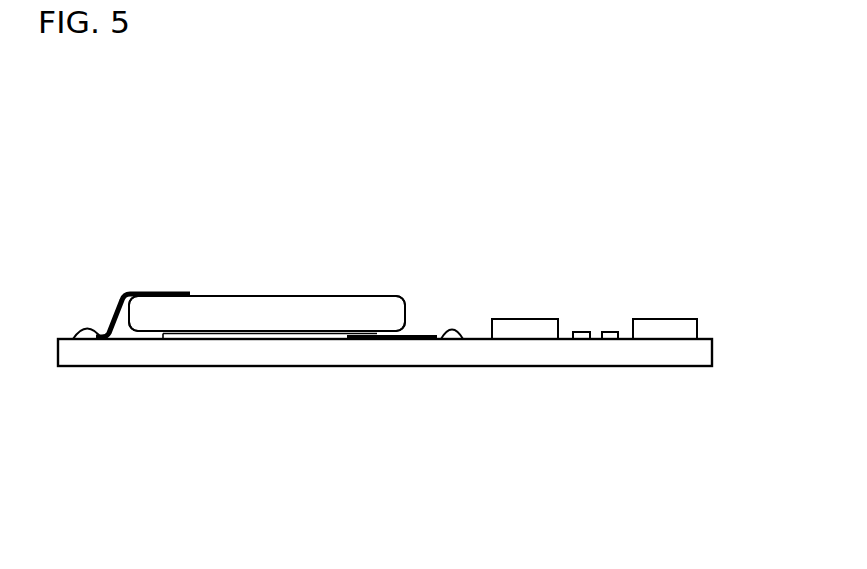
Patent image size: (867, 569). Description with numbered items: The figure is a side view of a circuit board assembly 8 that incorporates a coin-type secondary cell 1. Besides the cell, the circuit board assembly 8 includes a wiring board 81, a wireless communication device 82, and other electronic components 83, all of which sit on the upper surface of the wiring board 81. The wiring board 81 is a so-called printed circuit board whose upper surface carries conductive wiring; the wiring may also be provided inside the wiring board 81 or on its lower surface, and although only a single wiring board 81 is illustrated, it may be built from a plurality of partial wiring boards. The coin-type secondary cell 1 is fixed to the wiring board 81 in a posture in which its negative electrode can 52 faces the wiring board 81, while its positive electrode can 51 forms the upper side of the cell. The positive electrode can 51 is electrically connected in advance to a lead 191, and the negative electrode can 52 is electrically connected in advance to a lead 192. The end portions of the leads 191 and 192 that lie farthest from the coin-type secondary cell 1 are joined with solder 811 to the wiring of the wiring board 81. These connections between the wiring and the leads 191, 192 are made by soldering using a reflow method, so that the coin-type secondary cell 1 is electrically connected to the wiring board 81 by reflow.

The coin-type secondary cell 1 is at (247, 266).
The circuit board assembly 8 is at (133, 184).
The positive electrode can 51 is at (370, 297).
The negative electrode can 52 is at (293, 340).
The wiring board 81 is at (583, 366).
The solder 811 is at (85, 330).
The wireless communication device 82 is at (665, 319).
The electronic components 83 is at (559, 294).
The lead 191 is at (122, 297).
The lead 192 is at (418, 336).